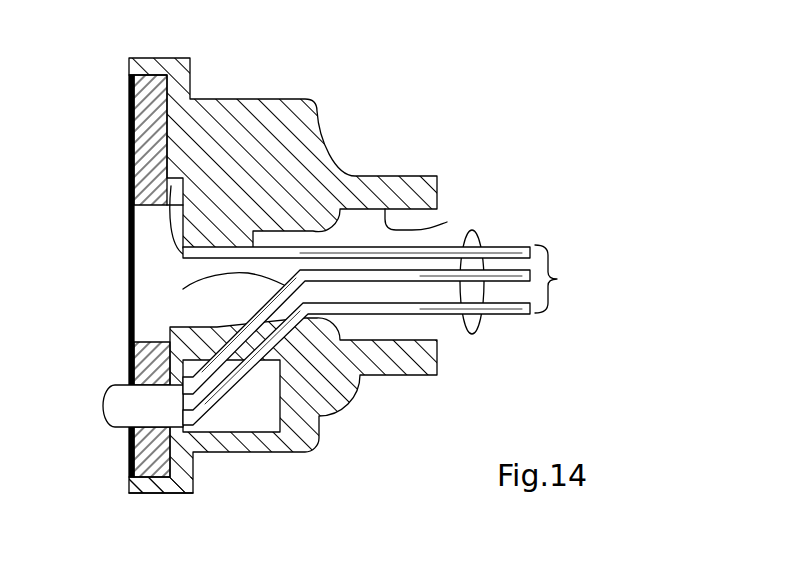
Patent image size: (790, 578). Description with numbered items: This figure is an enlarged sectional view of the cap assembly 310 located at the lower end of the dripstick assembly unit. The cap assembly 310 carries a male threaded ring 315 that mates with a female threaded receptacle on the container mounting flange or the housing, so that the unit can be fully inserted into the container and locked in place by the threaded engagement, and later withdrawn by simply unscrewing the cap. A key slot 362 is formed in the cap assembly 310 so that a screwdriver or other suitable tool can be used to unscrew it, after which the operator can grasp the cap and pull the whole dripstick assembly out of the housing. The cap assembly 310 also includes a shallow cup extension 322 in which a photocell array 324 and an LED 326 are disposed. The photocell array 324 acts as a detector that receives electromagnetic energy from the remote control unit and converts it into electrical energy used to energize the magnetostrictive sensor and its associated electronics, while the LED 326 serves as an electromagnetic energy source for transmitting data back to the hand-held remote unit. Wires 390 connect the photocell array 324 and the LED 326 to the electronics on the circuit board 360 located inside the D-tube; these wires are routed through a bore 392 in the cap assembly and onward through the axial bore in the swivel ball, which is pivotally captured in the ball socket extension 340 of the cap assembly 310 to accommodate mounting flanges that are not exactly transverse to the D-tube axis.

The cap assembly 310 is at (301, 274).
The male threaded ring 315 is at (257, 455).
The shallow cup extension 322 is at (162, 495).
The photocell array 324 is at (130, 125).
The LED 326 is at (125, 412).
The ball socket extension 340 is at (447, 222).
The circuit board 360 is at (611, 279).
The key slot 362 is at (142, 242).
The wires 390 is at (476, 334).
The bore 392 is at (183, 289).